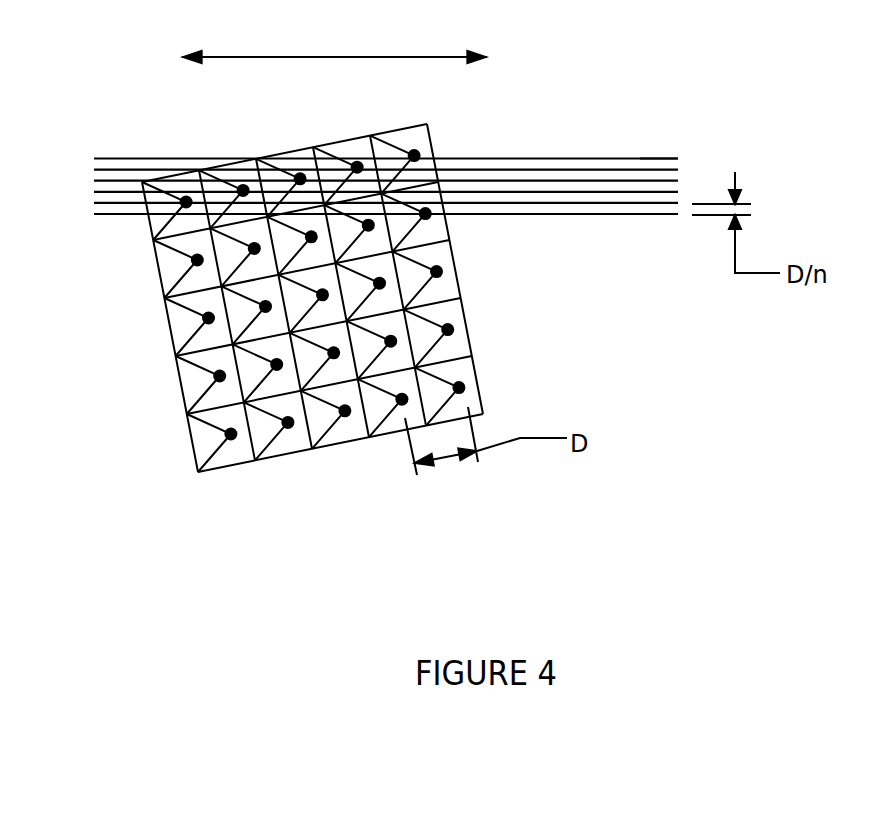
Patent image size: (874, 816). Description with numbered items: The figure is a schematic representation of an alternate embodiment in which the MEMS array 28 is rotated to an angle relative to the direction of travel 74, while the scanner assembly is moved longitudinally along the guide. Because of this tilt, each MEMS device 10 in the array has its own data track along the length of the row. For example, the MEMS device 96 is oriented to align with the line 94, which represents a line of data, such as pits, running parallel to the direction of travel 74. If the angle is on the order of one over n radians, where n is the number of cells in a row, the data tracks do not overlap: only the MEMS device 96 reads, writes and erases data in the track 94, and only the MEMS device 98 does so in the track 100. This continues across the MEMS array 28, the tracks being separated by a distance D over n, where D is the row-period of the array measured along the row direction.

The MEMS device 10 is at (235, 455).
The MEMS array 28 is at (470, 332).
The direction of travel 74 is at (310, 57).
The line 94 is at (607, 159).
The MEMS device 96 is at (415, 135).
The MEMS device 98 is at (357, 152).
The track 100 is at (678, 159).